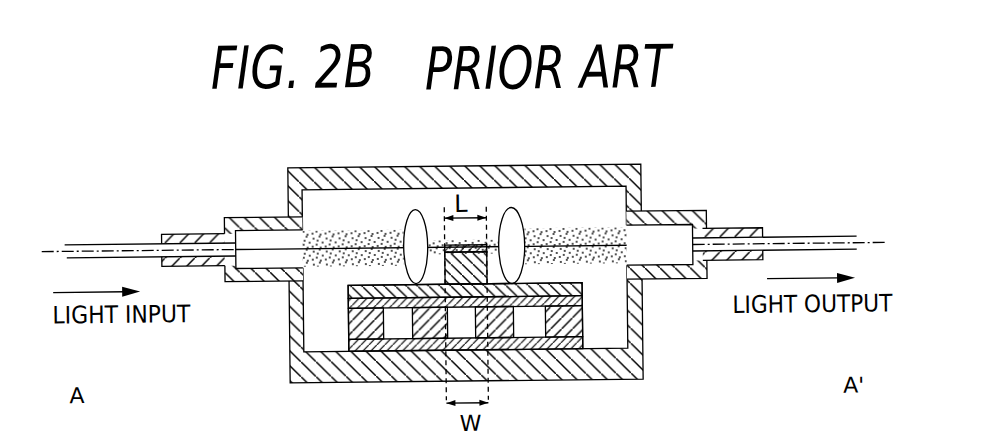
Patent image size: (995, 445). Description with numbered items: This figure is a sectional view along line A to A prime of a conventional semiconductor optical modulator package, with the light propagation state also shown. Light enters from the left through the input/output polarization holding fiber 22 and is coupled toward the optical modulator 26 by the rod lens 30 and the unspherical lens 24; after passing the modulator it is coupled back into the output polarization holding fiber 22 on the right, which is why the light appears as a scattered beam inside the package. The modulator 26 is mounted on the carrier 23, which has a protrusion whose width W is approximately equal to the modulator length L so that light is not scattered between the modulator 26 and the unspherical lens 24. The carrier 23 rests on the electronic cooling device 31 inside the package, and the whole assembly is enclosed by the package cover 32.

The polarization holding fiber 22 is at (790, 240).
The carrier 23 is at (348, 294).
The unspherical lens 24 is at (416, 219).
The optical modulator 26 is at (473, 245).
The rod lens 30 is at (276, 235).
The electronic cooling device 31 is at (586, 293).
The package cover 32 is at (594, 168).